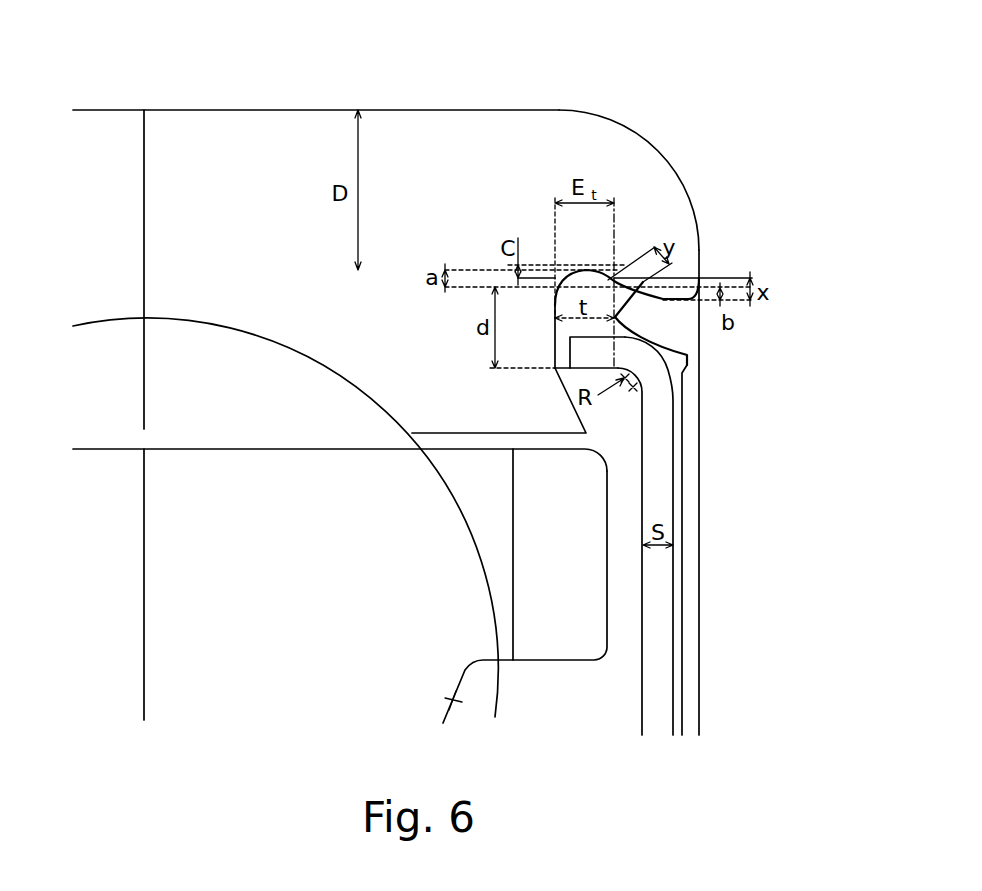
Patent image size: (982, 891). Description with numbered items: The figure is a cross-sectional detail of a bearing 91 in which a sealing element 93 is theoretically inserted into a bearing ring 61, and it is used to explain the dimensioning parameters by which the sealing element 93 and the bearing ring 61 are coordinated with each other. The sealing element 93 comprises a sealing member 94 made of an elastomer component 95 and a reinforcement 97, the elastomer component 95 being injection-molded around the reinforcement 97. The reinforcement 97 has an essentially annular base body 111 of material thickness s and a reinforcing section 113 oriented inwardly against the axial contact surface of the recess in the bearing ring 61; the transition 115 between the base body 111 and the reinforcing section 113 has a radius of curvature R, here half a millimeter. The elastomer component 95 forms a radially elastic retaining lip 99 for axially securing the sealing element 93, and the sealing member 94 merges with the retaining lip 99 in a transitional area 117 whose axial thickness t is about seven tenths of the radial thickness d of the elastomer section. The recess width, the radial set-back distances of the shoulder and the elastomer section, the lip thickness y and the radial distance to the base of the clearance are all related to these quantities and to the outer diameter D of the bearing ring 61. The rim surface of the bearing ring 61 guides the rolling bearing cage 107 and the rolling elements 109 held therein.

The bearing ring 61 is at (467, 127).
The bearing 91 is at (648, 113).
The sealing element 93 is at (699, 458).
The sealing member 94 is at (677, 635).
The reinforcement 97 is at (658, 693).
The radially elastic retaining lip 99 is at (623, 270).
The rolling bearing cage 107 is at (554, 648).
The rolling elements 109 is at (98, 330).
The annular base body 111 is at (658, 595).
The reinforcing section 113 is at (578, 370).
The transition 115 is at (633, 390).
The transitional area 117 is at (619, 317).
The elastomer component 95 is at (588, 352).